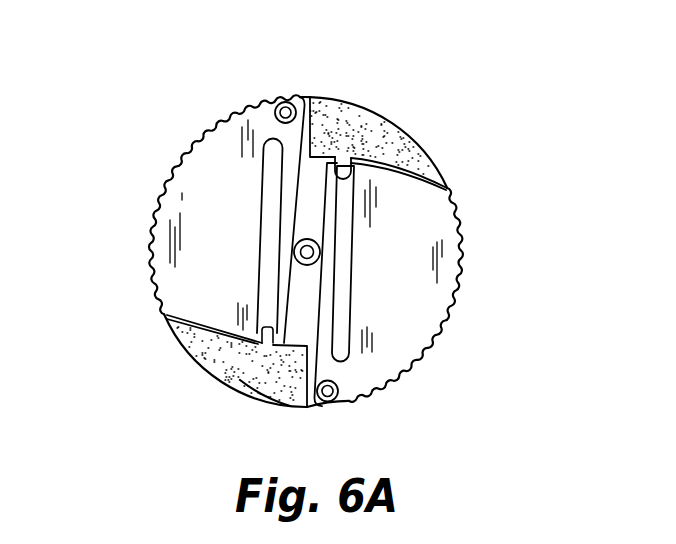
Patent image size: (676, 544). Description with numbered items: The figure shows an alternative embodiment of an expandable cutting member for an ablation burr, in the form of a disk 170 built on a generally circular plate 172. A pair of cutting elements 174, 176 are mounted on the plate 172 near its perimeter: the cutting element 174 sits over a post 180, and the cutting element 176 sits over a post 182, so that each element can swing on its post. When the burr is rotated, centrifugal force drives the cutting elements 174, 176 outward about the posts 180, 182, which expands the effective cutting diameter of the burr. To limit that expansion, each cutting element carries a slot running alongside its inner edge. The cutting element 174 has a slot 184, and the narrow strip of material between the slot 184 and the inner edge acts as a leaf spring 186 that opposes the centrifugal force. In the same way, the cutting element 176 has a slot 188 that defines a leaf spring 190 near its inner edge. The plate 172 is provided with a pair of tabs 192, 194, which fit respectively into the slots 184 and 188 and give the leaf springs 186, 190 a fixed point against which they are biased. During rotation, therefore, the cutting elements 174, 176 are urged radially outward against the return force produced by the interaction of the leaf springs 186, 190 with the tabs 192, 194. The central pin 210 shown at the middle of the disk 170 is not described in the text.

The disk 170 is at (232, 88).
The circular plate 172 is at (433, 161).
The cutting element 174 is at (407, 327).
The cutting element 176 is at (178, 207).
The post 180 is at (346, 399).
The post 182 is at (285, 100).
The slot 184 is at (345, 297).
The leaf spring 186 is at (342, 190).
The slot 188 is at (268, 298).
The leaf spring 190 is at (272, 397).
The tab 192 is at (350, 170).
The tab 194 is at (268, 343).
The central pivot pin 210 is at (310, 227).